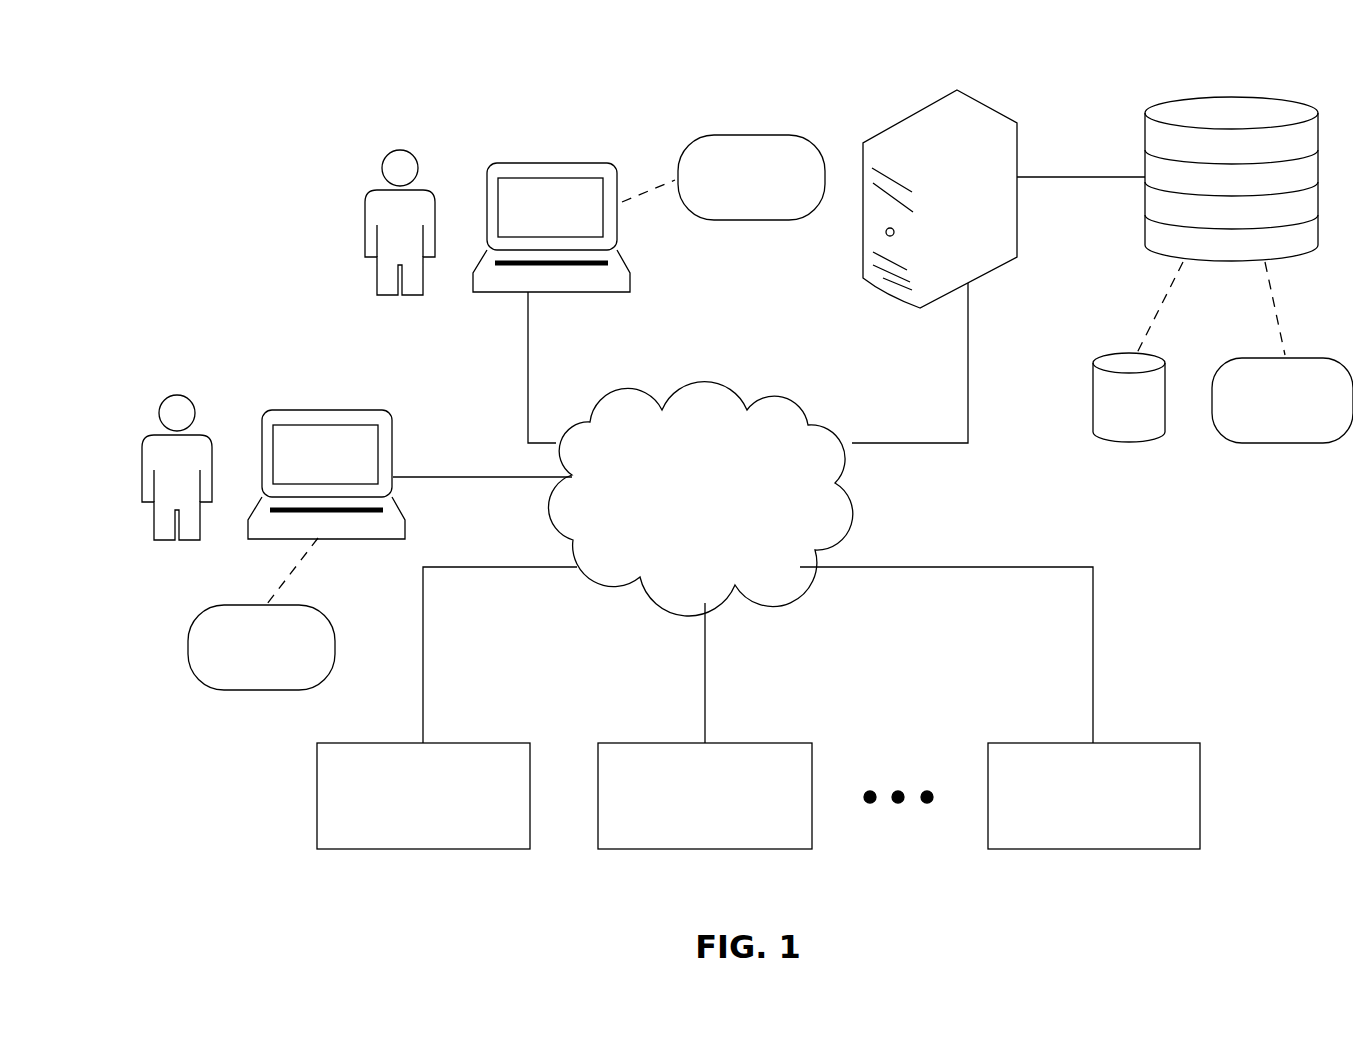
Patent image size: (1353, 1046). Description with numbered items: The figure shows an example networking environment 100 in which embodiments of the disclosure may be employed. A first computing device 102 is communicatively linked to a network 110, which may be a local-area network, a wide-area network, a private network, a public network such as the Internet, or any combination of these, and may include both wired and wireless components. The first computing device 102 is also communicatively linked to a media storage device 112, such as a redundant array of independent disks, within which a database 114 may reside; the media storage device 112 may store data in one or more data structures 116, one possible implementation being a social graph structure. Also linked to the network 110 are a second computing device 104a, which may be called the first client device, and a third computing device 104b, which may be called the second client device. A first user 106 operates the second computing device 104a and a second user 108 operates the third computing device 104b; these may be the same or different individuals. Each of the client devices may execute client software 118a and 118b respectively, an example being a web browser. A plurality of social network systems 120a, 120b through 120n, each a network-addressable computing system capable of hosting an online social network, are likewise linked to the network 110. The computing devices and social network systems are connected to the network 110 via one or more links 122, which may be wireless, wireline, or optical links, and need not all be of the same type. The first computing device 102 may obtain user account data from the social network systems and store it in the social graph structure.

The system environment 100 is at (262, 94).
The first computing device 102 is at (980, 97).
The second computing device 104a is at (322, 410).
The third computing device 104b is at (545, 163).
The first user 106 is at (142, 473).
The second user 108 is at (363, 227).
The network 110 is at (703, 382).
The media storage device 112 is at (1230, 93).
The database 114 is at (1128, 445).
The data structure 116 is at (1268, 443).
The client software 118a is at (188, 658).
The client software 118b is at (750, 135).
The social network system 120a is at (423, 796).
The social network system 120b is at (705, 796).
The social network system 120n is at (1094, 796).
The link 122 is at (998, 310).